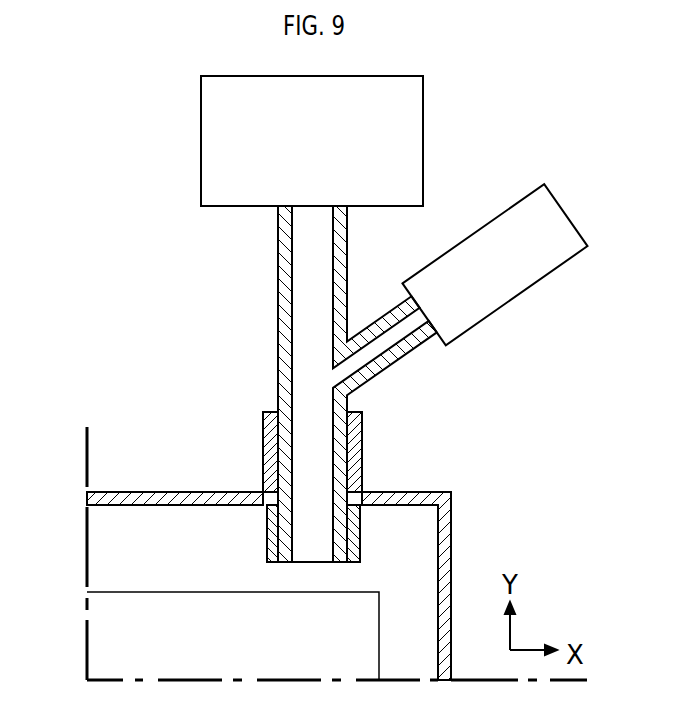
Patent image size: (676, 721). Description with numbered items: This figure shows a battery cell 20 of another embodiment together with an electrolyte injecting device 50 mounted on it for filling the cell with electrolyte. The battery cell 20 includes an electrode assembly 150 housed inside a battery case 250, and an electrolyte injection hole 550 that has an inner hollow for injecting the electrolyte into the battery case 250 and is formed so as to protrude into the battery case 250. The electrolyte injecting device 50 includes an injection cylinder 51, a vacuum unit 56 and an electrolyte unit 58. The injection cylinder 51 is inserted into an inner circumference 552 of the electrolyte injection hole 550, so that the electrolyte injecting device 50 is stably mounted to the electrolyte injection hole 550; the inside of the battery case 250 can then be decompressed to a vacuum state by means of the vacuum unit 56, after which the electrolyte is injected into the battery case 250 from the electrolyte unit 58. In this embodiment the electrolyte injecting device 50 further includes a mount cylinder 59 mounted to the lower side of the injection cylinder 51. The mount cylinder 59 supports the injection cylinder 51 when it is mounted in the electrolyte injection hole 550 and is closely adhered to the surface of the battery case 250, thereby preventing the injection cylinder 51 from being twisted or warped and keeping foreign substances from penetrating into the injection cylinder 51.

The battery cell 20 is at (155, 450).
The electrolyte injecting device 50 is at (302, 384).
The injection cylinder 51 is at (283, 347).
The vacuum unit 56 is at (212, 143).
The electrolyte unit 58 is at (553, 270).
The mount cylinder 59 is at (362, 448).
The electrode assembly 150 is at (90, 633).
The battery case 250 is at (92, 494).
The electrolyte injection hole 550 is at (357, 525).
The inner circumference 552 is at (343, 543).